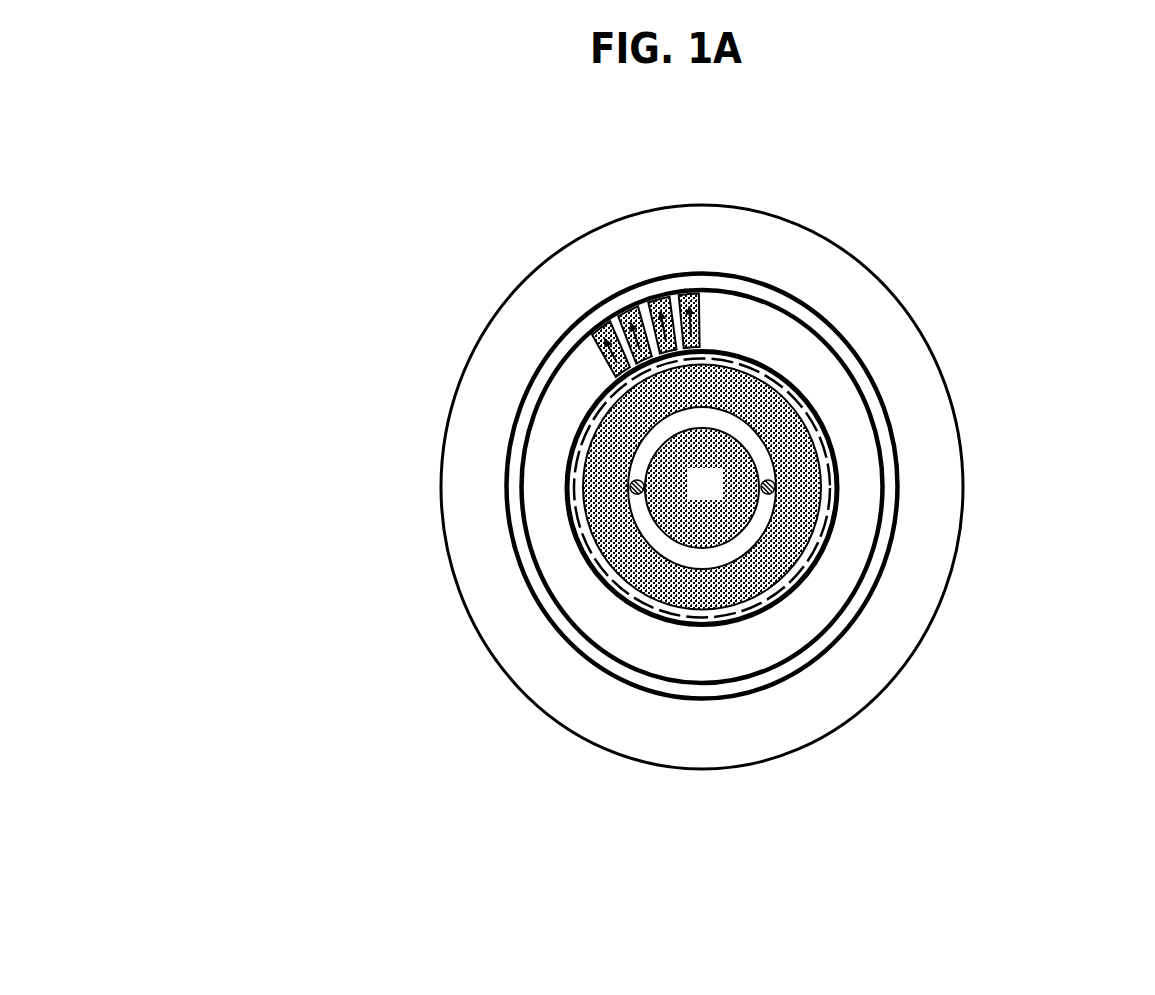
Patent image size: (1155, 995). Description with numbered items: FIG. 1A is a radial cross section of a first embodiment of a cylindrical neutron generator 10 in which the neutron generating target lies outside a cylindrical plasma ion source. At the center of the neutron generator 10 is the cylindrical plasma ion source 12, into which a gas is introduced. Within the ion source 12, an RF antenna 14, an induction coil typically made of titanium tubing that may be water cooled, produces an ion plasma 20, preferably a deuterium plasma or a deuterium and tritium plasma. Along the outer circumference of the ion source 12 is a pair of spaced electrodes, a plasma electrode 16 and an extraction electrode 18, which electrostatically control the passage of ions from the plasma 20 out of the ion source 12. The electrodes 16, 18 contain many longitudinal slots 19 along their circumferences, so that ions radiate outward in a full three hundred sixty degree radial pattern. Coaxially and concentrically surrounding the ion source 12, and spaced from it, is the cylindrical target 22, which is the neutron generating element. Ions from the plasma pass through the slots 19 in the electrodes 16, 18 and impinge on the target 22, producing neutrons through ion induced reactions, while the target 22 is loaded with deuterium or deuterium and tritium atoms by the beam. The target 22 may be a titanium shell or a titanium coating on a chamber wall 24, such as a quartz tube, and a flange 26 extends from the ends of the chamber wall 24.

The neutron generator 10 is at (775, 147).
The plasma ion source 12 is at (691, 499).
The RF antenna 14 is at (617, 410).
The plasma electrode 16 is at (813, 523).
The extraction electrode 18 is at (577, 540).
The longitudinal slots 19 is at (760, 358).
The ion plasma 20 is at (742, 574).
The target 22 is at (886, 440).
The chamber wall 24 is at (853, 350).
The flange 26 is at (617, 220).